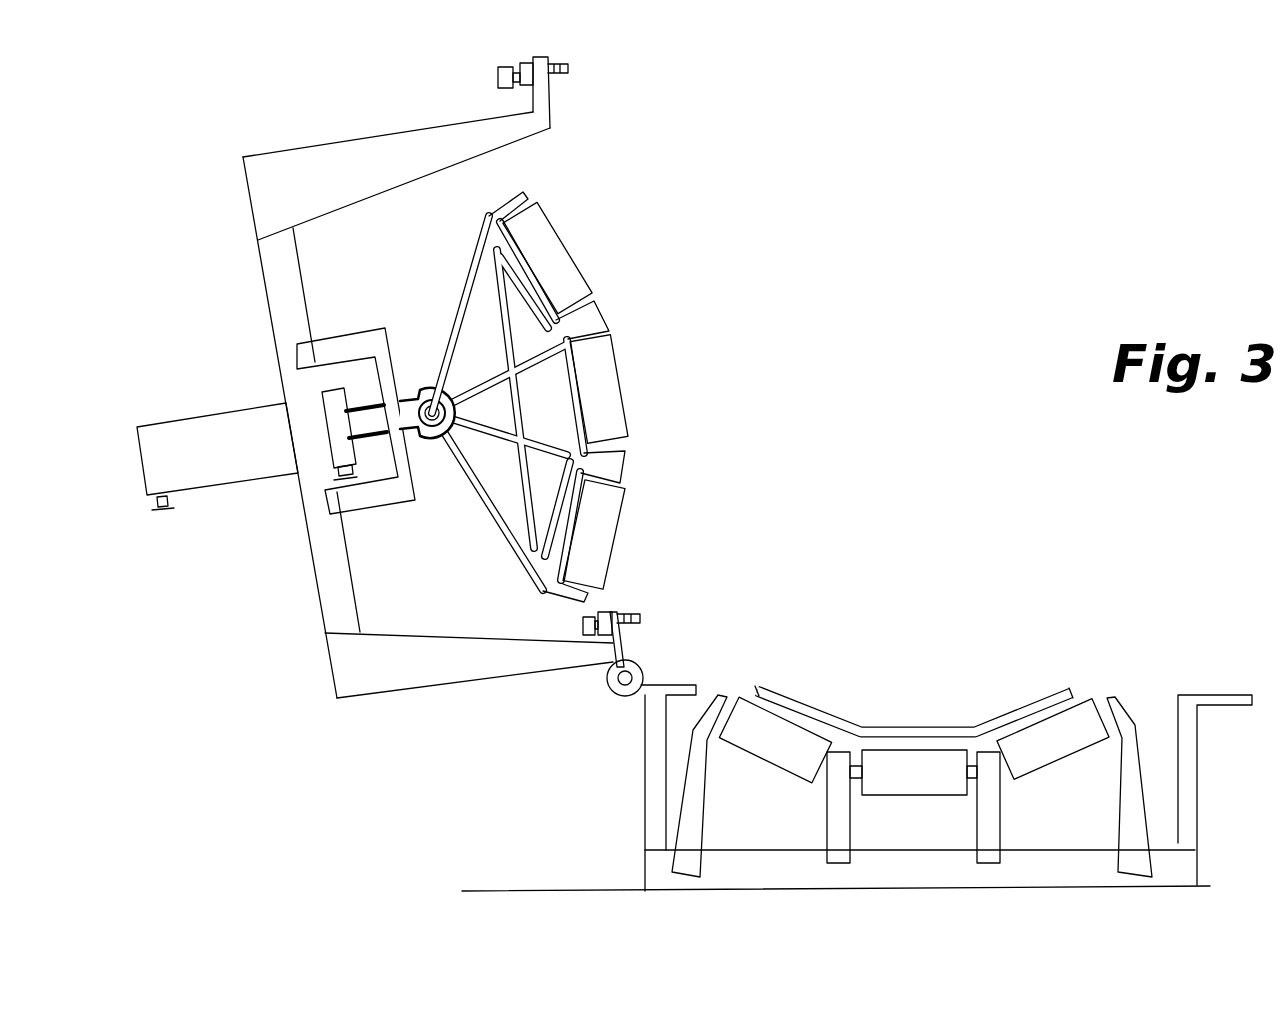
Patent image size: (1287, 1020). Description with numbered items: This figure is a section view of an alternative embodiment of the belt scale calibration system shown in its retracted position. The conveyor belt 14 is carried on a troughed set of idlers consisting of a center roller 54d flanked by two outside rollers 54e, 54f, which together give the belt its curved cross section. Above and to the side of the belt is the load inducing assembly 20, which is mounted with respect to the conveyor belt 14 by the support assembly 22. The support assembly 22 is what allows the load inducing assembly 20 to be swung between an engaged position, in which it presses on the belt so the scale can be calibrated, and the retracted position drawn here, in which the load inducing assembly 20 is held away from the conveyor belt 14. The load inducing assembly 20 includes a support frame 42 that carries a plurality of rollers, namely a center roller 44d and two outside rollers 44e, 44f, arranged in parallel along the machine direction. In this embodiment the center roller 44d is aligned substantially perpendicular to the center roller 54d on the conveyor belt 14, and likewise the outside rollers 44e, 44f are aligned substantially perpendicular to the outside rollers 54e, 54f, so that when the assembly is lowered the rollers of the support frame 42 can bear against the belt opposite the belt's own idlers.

The conveyor belt 14 is at (862, 712).
The load inducing assembly 20 is at (483, 496).
The support assembly 22 is at (388, 678).
The support frame 42 is at (468, 268).
The center roller 44d is at (597, 393).
The outside roller 44e is at (593, 535).
The outside roller 44f is at (552, 260).
The center roller 54d is at (910, 760).
The outside roller 54e is at (767, 720).
The outside roller 54f is at (1048, 730).